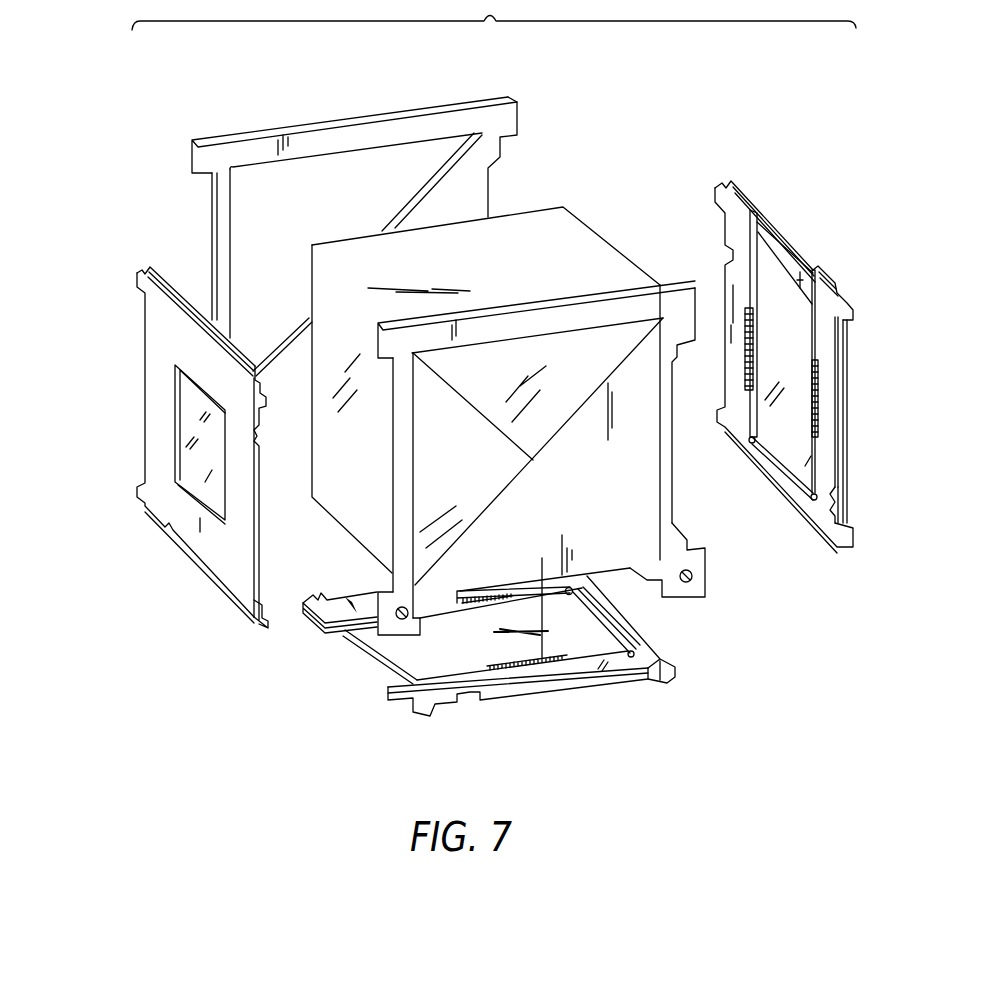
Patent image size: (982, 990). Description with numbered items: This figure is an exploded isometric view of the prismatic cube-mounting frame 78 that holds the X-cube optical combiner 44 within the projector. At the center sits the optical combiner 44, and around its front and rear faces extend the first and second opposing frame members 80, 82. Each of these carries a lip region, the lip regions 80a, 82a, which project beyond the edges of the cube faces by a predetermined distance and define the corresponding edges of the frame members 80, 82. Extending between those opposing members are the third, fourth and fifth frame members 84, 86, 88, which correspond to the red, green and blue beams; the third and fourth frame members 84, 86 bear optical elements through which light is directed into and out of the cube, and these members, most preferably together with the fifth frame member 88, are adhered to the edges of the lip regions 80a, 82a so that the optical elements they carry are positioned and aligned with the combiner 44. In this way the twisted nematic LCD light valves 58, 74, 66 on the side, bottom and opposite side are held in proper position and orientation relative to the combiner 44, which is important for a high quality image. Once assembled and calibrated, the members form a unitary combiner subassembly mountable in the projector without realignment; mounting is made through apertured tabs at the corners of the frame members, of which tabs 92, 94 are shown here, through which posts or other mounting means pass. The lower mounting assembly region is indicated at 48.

The optical combiner 44 is at (524, 266).
The bottom mounting assembly 48 is at (298, 675).
The light valve 58 is at (116, 353).
The light valve 66 is at (815, 228).
The light valve 74 is at (700, 652).
The prismatic cube-mounting frame 78 is at (644, 170).
The first frame member 80 is at (657, 503).
The lip region 80a is at (742, 491).
The second frame member 82 is at (384, 131).
The lip region 82a is at (547, 182).
The third frame member 84 is at (217, 562).
The fourth frame member 86 is at (567, 683).
The fifth frame member 88 is at (828, 450).
The apertured tab 92 is at (706, 578).
The apertured tab 94 is at (405, 628).